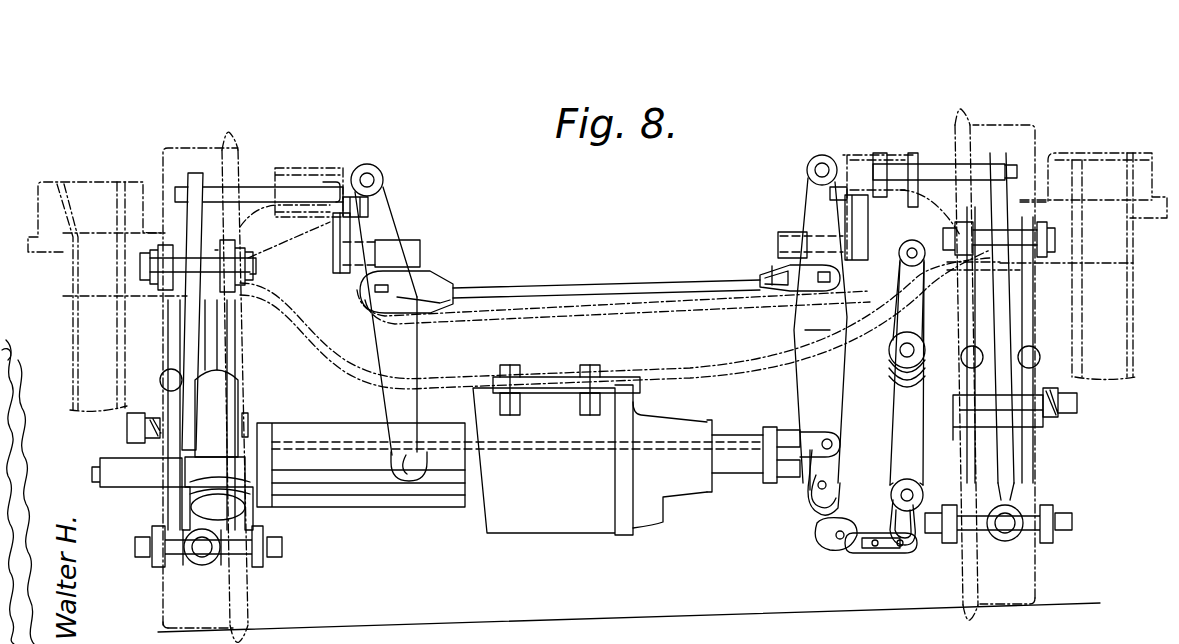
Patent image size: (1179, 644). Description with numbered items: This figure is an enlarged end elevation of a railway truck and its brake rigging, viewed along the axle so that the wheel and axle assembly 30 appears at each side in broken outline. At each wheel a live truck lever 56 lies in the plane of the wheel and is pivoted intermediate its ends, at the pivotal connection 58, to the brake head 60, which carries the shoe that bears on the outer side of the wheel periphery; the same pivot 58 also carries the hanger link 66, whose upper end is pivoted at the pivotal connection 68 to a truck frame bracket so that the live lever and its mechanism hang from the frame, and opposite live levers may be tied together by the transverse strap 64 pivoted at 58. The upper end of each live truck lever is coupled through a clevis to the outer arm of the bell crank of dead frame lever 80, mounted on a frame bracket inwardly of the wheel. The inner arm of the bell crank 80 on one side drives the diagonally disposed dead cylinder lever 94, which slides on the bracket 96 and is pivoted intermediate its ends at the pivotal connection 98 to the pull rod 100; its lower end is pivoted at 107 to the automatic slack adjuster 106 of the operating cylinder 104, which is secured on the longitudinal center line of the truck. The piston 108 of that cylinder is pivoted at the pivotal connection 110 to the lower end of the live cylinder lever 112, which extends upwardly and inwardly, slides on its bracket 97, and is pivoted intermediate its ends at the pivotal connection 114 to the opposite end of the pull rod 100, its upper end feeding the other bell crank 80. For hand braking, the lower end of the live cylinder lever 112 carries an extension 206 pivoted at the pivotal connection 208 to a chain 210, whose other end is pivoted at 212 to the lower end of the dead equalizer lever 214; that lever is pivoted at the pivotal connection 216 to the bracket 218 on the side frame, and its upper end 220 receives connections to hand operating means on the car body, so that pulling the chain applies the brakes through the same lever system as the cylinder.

The wheel and axle assembly 30 is at (238, 148).
The live truck lever 56 is at (196, 173).
The pivotal connection 58 is at (244, 428).
The brake head 60 is at (212, 353).
The transverse strap 64 is at (856, 432).
The hanger link 66 is at (237, 345).
The pivotal connection 68 is at (256, 262).
The bell crank of dead frame lever 80 is at (250, 196).
The dead cylinder lever 94 is at (385, 235).
The bracket 96 is at (418, 253).
The bracket 97 is at (776, 232).
The pivotal connection 98 is at (390, 290).
The pull rod 100 is at (518, 298).
The operating cylinder 104 is at (512, 522).
The automatic slack adjuster 106 is at (322, 498).
The pivotal connection 107 is at (420, 465).
The piston 108 is at (738, 460).
The pivotal connection 110 is at (822, 436).
The live cylinder lever 112 is at (800, 342).
The pivotal connection 114 is at (778, 270).
The extension 206 is at (812, 475).
The pivotal connection 208 is at (818, 505).
The chain 210 is at (855, 548).
The pivotal connection 212 is at (892, 490).
The dead equalizer lever 214 is at (926, 462).
The pivotal connection 216 is at (910, 345).
The bracket 218 is at (930, 332).
The upper end of equalizer lever 220 is at (940, 240).